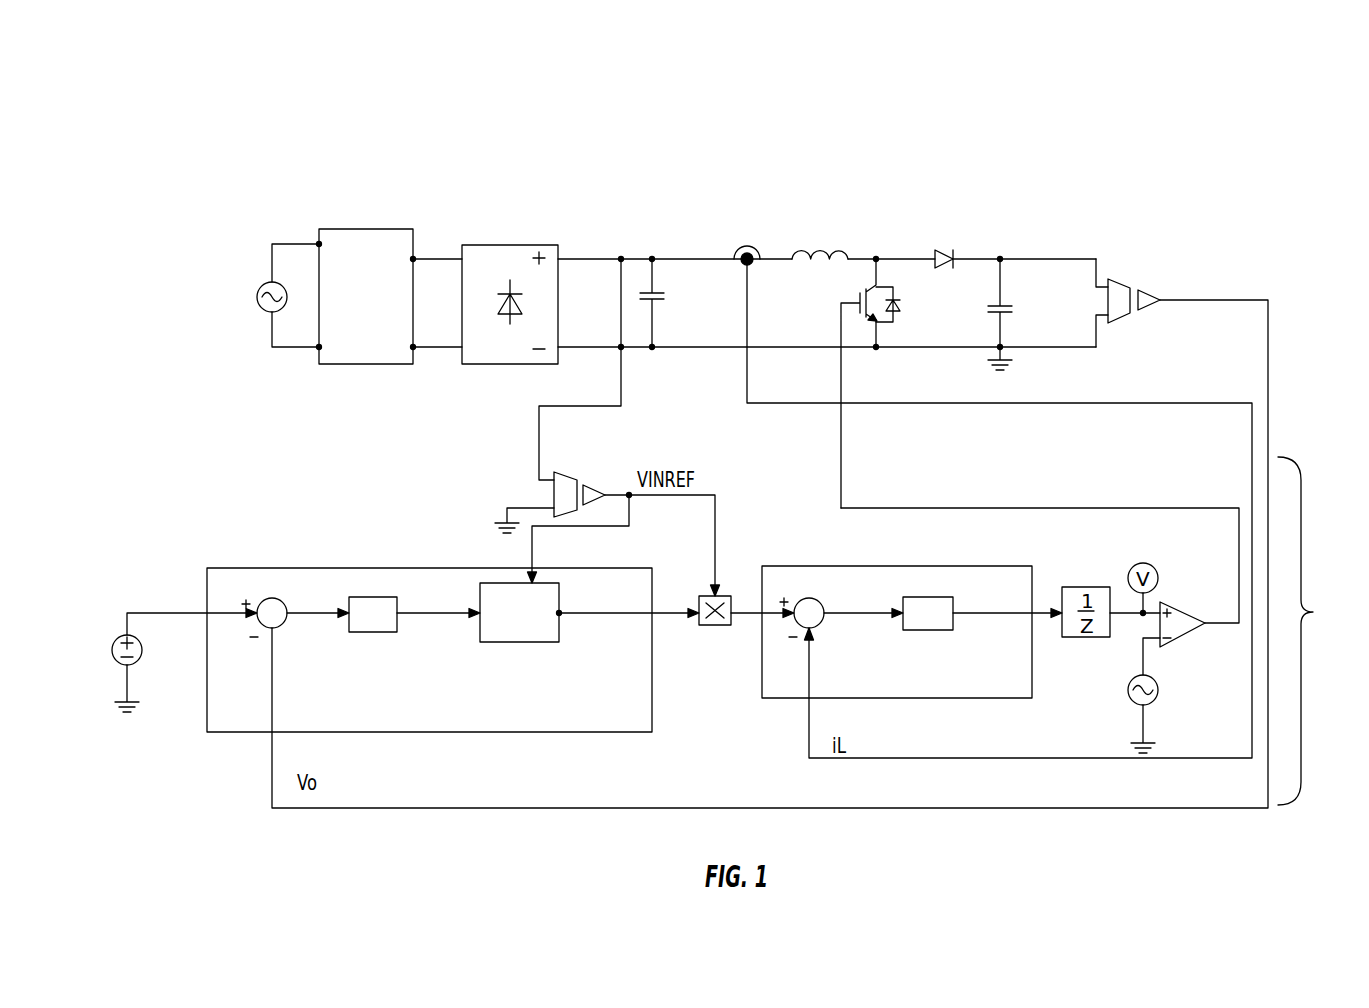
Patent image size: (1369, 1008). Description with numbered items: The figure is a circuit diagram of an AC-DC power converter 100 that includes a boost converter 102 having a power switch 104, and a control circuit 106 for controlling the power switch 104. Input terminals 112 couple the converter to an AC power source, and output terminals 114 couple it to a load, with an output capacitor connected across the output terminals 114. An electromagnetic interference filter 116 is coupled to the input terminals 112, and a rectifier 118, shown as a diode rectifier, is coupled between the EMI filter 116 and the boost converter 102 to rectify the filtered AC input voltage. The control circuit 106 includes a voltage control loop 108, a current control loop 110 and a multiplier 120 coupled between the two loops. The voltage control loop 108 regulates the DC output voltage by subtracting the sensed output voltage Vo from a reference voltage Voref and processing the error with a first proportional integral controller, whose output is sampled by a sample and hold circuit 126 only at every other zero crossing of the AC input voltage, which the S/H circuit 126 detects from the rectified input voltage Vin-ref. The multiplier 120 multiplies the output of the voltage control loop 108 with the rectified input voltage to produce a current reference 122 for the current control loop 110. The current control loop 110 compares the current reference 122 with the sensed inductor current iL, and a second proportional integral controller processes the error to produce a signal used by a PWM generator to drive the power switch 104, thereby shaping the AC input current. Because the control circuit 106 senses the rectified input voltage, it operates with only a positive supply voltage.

The power converter 100 is at (1084, 178).
The boost converter 102 is at (857, 228).
The power switch 104 is at (856, 290).
The control circuit 106 is at (1311, 631).
The voltage control loop 108 is at (223, 732).
The current control loop 110 is at (786, 698).
The input terminals 112 is at (293, 244).
The output terminals 114 is at (1083, 258).
The electromagnetic interference (EMI) filter 116 is at (358, 229).
The rectifier 118 is at (503, 245).
The multiplier 120 is at (724, 625).
The current reference 122 is at (745, 610).
The sample and hold (S/H) circuit 126 is at (547, 583).